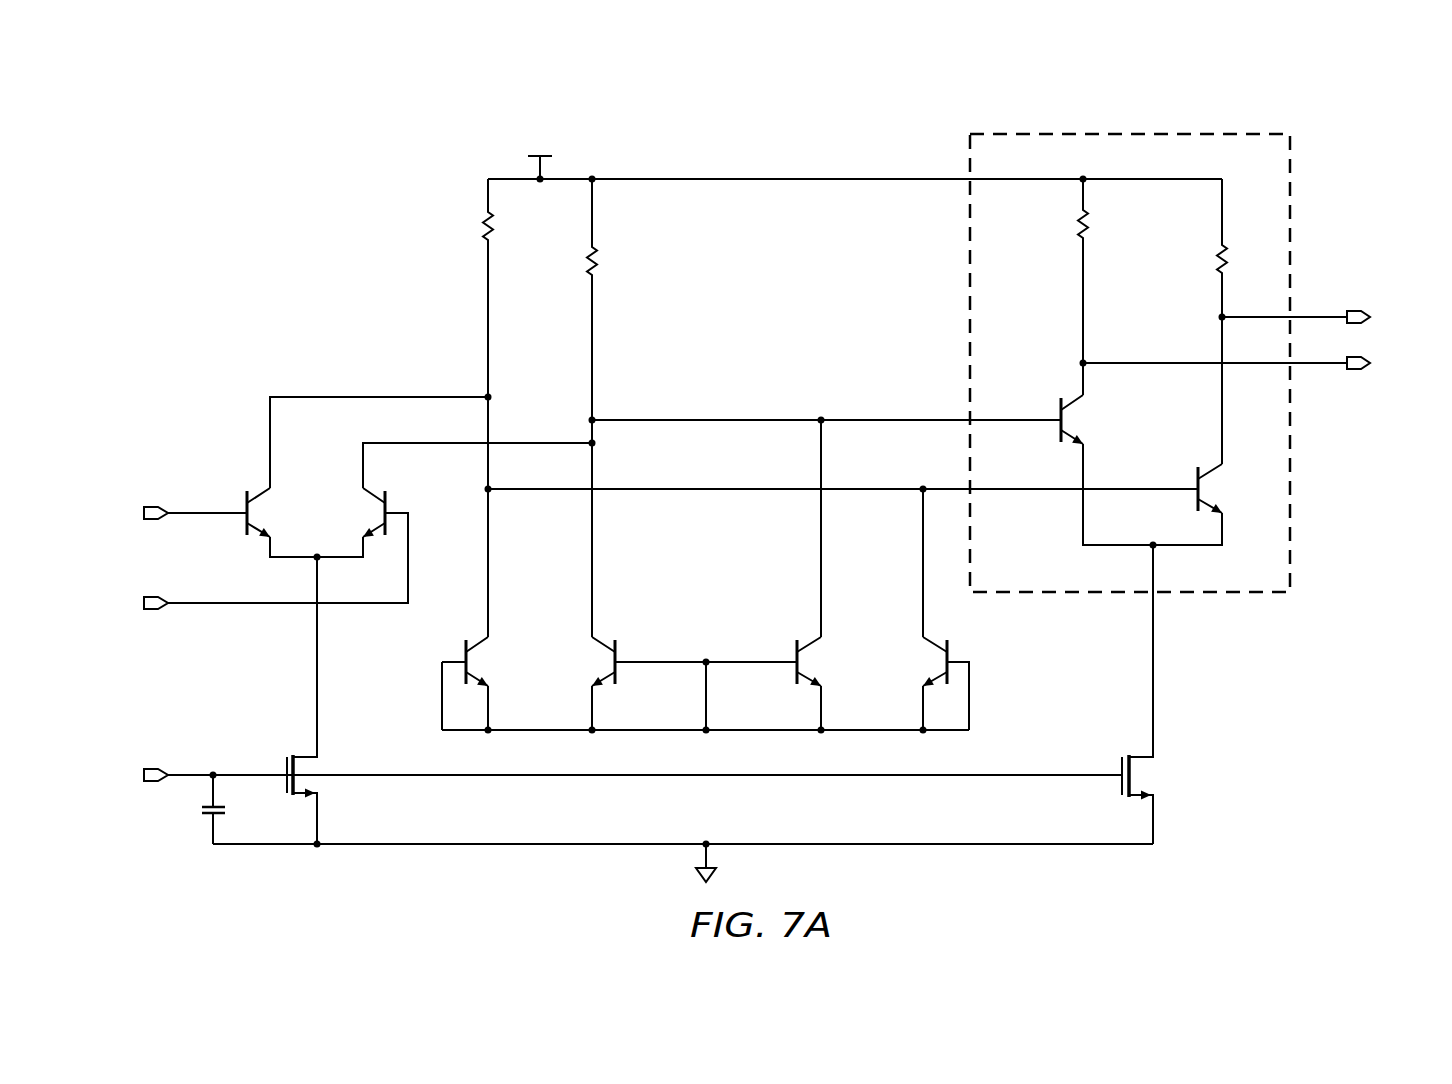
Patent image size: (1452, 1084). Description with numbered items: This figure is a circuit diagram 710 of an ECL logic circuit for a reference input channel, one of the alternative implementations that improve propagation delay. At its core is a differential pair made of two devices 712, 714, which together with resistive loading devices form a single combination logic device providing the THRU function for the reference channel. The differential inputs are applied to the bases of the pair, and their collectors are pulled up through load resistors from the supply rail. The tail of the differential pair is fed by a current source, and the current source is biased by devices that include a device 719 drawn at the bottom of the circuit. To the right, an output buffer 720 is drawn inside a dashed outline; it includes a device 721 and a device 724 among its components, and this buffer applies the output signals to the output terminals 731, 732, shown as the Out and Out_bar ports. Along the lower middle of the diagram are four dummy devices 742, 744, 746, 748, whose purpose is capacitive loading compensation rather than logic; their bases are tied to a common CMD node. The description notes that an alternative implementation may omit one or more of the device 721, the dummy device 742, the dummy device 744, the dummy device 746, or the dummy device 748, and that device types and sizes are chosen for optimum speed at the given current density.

The circuit diagram 710 is at (284, 124).
The differential pair device 712 is at (246, 503).
The differential pair device 714 is at (386, 503).
The current source bias device 719 is at (1121, 765).
The output buffer 720 is at (1133, 124).
The output buffer device 721 is at (1060, 411).
The output buffer device 724 is at (1220, 258).
The output terminal 731 is at (1318, 314).
The output terminal 732 is at (1318, 366).
The dummy device 742 is at (465, 652).
The dummy device 744 is at (616, 652).
The dummy device 746 is at (796, 652).
The dummy device 748 is at (948, 652).